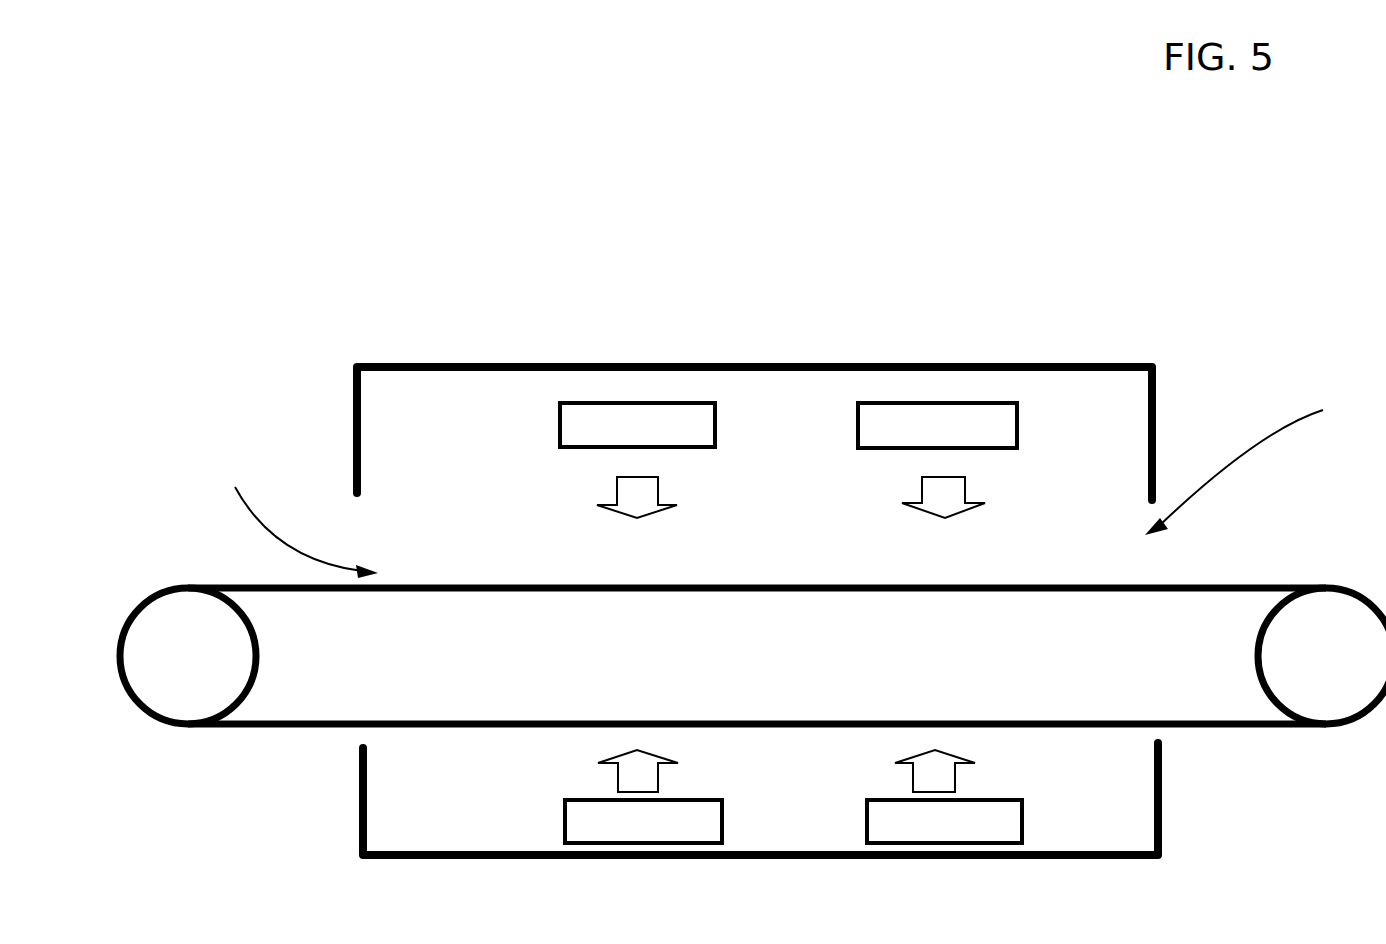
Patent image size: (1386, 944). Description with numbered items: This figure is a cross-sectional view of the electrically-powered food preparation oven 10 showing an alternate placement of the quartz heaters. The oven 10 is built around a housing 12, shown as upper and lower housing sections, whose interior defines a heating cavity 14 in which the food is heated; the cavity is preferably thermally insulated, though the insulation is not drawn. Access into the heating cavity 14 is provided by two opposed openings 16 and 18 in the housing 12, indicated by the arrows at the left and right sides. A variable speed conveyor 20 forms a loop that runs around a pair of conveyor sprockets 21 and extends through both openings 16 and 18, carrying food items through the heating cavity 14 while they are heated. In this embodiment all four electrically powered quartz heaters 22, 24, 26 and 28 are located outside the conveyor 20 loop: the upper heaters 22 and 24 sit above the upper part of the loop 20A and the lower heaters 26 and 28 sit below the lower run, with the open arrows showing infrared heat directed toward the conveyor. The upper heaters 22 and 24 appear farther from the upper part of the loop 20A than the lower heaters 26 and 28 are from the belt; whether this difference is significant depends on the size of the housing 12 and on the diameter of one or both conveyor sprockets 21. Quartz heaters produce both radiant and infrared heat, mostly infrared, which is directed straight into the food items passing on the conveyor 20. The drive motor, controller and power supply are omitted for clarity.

The food preparation oven 10 is at (867, 111).
The housing 12 is at (553, 355).
The heating cavity 14 is at (757, 595).
The opening 16 is at (291, 515).
The opening 18 is at (1253, 458).
The variable speed conveyor 20 is at (647, 598).
The upper part of the loop 20A is at (675, 578).
The conveyor sprocket 21 is at (753, 656).
The quartz heater 22 is at (637, 460).
The quartz heater 24 is at (937, 460).
The quartz heater 26 is at (643, 796).
The quartz heater 28 is at (944, 796).